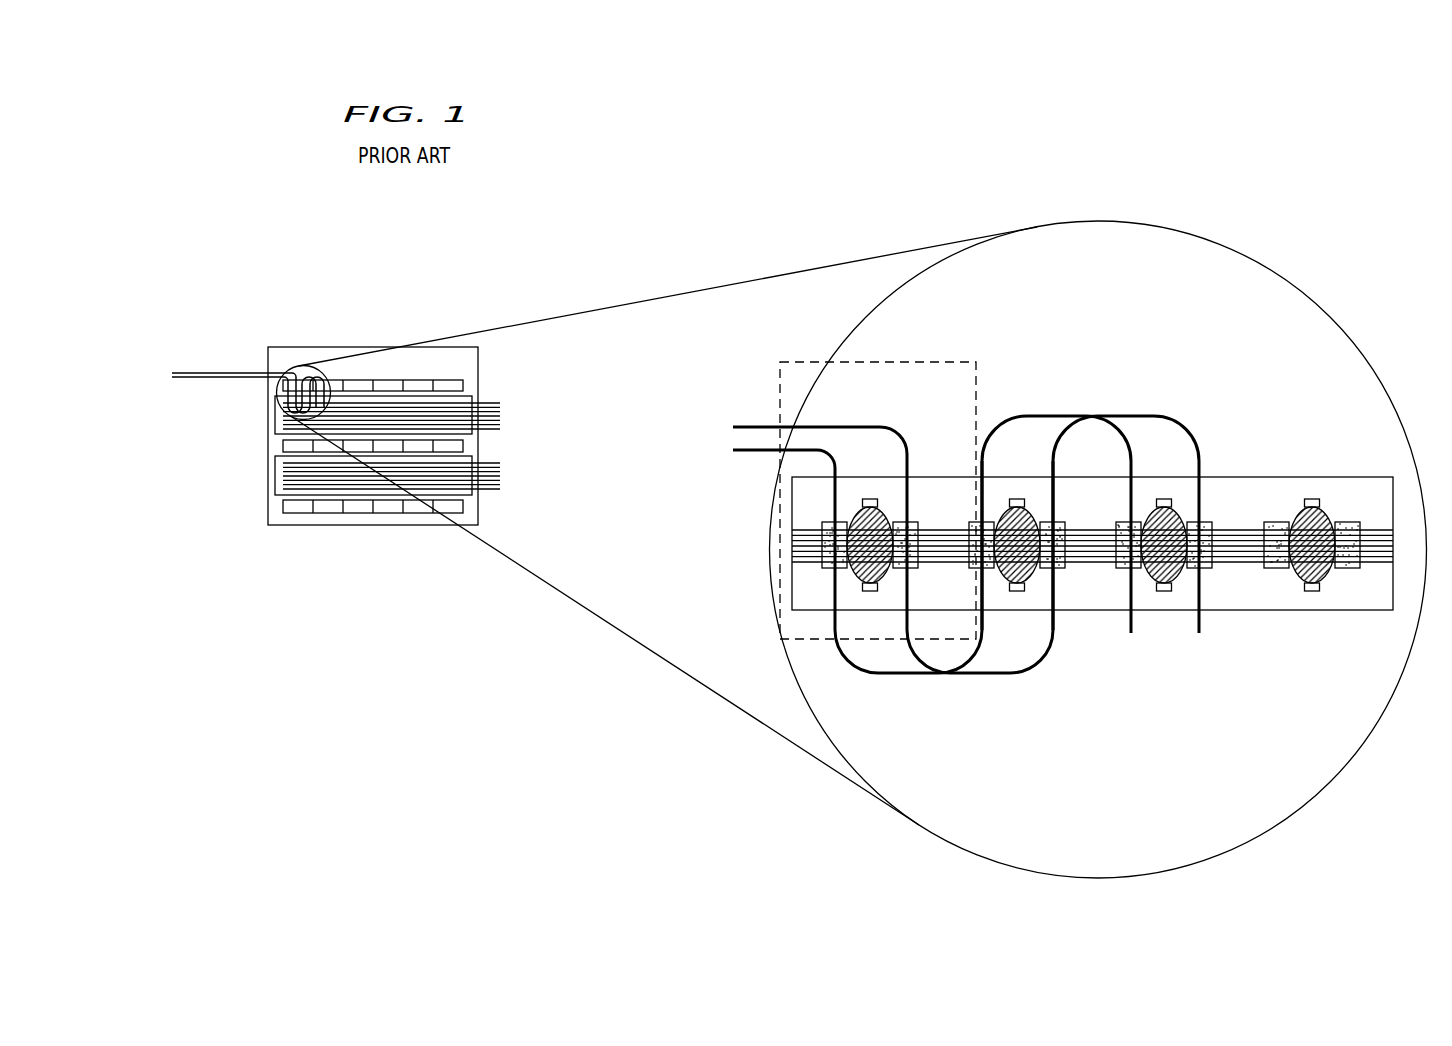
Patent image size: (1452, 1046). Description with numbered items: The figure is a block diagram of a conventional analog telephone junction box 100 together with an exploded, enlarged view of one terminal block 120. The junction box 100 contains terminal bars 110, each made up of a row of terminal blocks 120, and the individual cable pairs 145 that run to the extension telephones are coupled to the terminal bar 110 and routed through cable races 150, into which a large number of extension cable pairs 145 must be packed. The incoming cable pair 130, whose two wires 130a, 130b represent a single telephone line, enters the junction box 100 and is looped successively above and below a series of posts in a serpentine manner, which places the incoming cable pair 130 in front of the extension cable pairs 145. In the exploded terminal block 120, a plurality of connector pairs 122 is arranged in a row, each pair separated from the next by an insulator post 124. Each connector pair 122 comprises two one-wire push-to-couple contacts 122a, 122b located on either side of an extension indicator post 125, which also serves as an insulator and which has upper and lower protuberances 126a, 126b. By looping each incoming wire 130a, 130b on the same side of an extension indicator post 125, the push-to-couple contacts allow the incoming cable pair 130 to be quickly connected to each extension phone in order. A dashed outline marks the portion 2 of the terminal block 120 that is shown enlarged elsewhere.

The analog telephone junction box 100 is at (357, 383).
The terminal bar 110 is at (253, 430).
The cable race 150 is at (478, 400).
The extension cable pair 145 is at (503, 401).
The incoming cable pair 130 is at (657, 492).
The incoming cable pair wire 130a is at (217, 368).
The incoming cable pair wire 130b is at (651, 525).
The portion of terminal block 2 is at (802, 362).
The connector pair 122 is at (1012, 467).
The one-wire push-to-couple contact 122a is at (970, 520).
The one-wire push-to-couple contact 122b is at (1081, 504).
The terminal block 120 is at (1092, 514).
The insulator post 124 is at (1093, 553).
The extension indicator post 125 is at (1183, 517).
The upper protuberance 126a is at (1317, 498).
The lower protuberance 126b is at (1310, 592).